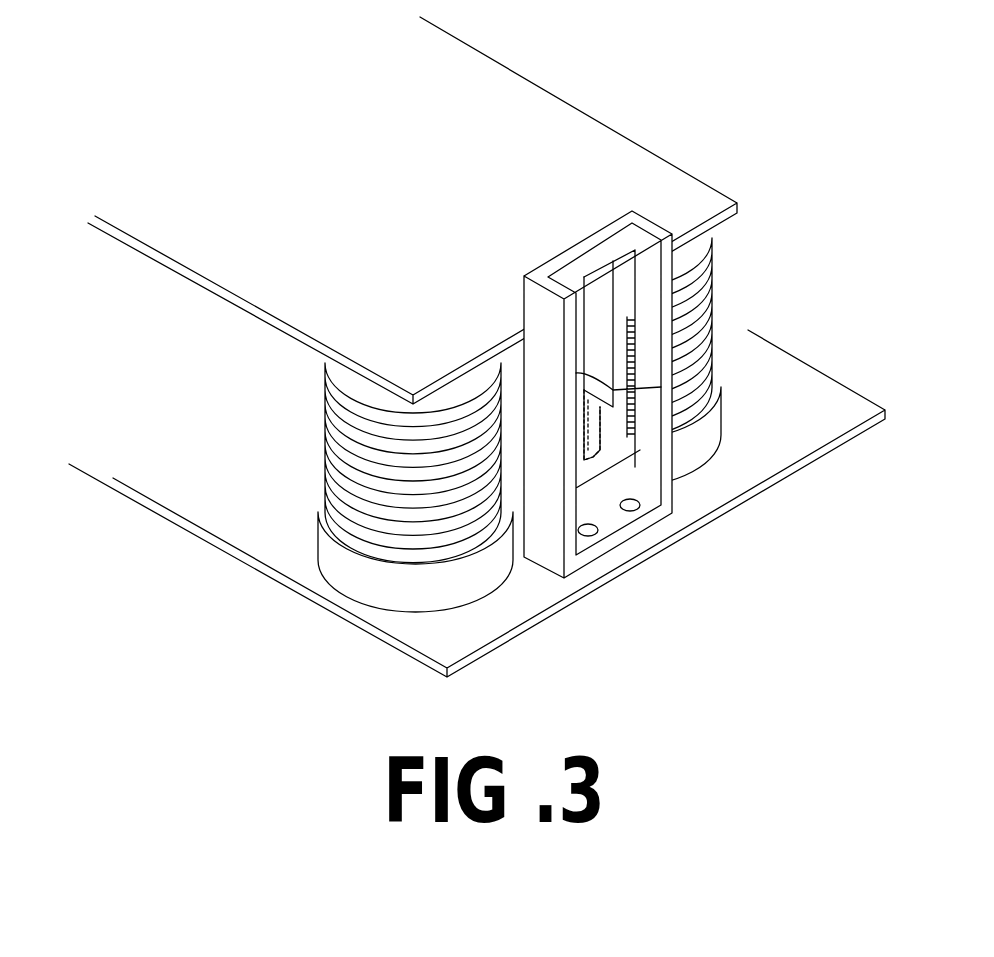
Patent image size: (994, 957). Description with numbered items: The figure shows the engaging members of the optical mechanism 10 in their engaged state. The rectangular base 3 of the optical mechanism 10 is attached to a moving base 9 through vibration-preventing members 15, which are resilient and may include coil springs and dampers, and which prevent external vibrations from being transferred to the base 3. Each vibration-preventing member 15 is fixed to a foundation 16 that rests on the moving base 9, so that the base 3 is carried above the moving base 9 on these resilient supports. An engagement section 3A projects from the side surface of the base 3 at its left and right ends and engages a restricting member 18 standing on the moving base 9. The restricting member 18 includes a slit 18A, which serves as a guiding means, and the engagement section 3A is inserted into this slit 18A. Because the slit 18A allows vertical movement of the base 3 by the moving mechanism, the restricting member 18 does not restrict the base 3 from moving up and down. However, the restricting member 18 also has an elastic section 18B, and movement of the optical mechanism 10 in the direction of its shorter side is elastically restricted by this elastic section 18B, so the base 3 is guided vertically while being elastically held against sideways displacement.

The base 3 is at (246, 173).
The engagement section 3A is at (600, 330).
The moving base 9 is at (153, 473).
The optical mechanism 10 is at (461, 373).
The vibration-preventing member 15 is at (327, 451).
The foundation 16 is at (380, 598).
The restricting member 18 is at (676, 438).
The slit 18A is at (603, 448).
The elastic section 18B is at (655, 336).